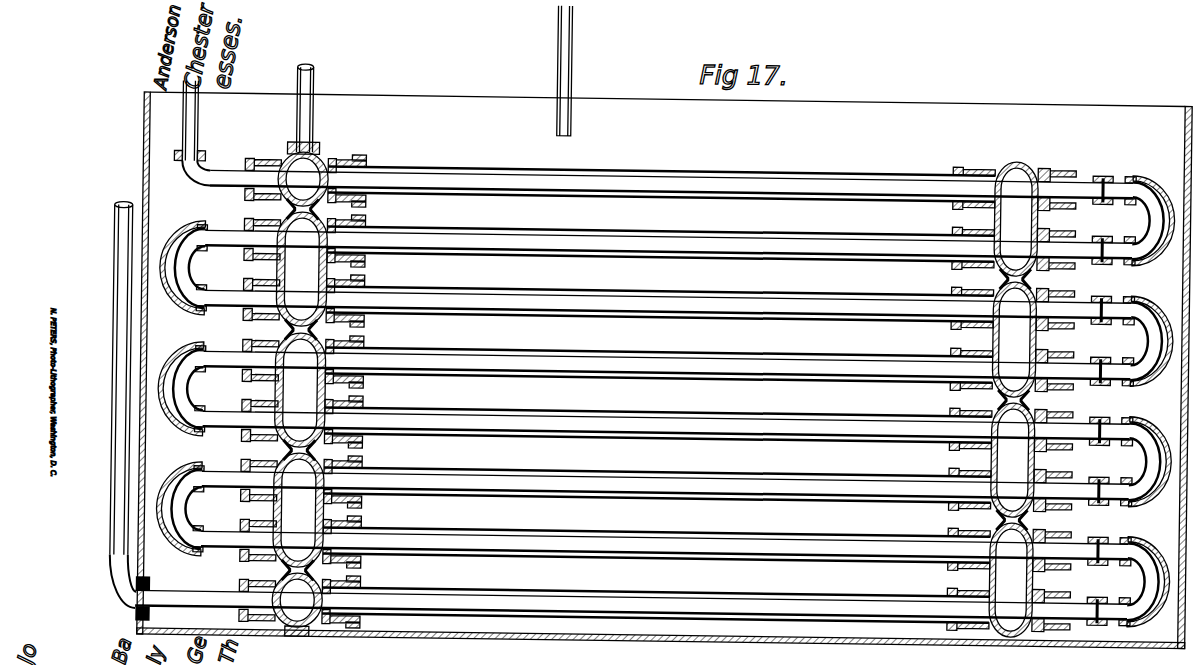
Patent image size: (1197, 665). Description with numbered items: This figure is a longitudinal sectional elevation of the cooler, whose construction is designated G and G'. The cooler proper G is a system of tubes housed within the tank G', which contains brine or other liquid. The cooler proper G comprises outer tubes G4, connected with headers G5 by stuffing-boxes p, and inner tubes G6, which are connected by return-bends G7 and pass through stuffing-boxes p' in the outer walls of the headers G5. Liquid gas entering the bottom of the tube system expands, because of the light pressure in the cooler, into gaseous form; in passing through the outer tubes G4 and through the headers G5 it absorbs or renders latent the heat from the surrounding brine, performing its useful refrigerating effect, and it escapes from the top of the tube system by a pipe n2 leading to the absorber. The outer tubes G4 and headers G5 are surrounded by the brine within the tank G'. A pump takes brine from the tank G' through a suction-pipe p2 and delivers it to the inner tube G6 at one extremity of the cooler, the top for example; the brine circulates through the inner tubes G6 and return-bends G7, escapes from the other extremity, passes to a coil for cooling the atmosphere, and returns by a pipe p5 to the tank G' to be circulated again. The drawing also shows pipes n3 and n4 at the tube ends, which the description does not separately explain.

The cooler proper G is at (810, 161).
The tank G' is at (664, 370).
The outer tubes G4 is at (658, 384).
The headers G5 is at (655, 395).
The inner tubes G6 is at (830, 556).
The return-bends G7 is at (665, 394).
The stuffing-boxes p is at (659, 396).
The stuffing-boxes p' is at (680, 395).
The suction-pipe p2 is at (297, 603).
The pipe p5 is at (576, 71).
The pipe n2 is at (310, 103).
The inlet pipe n3 is at (197, 132).
The outlet pipe n4 is at (100, 605).